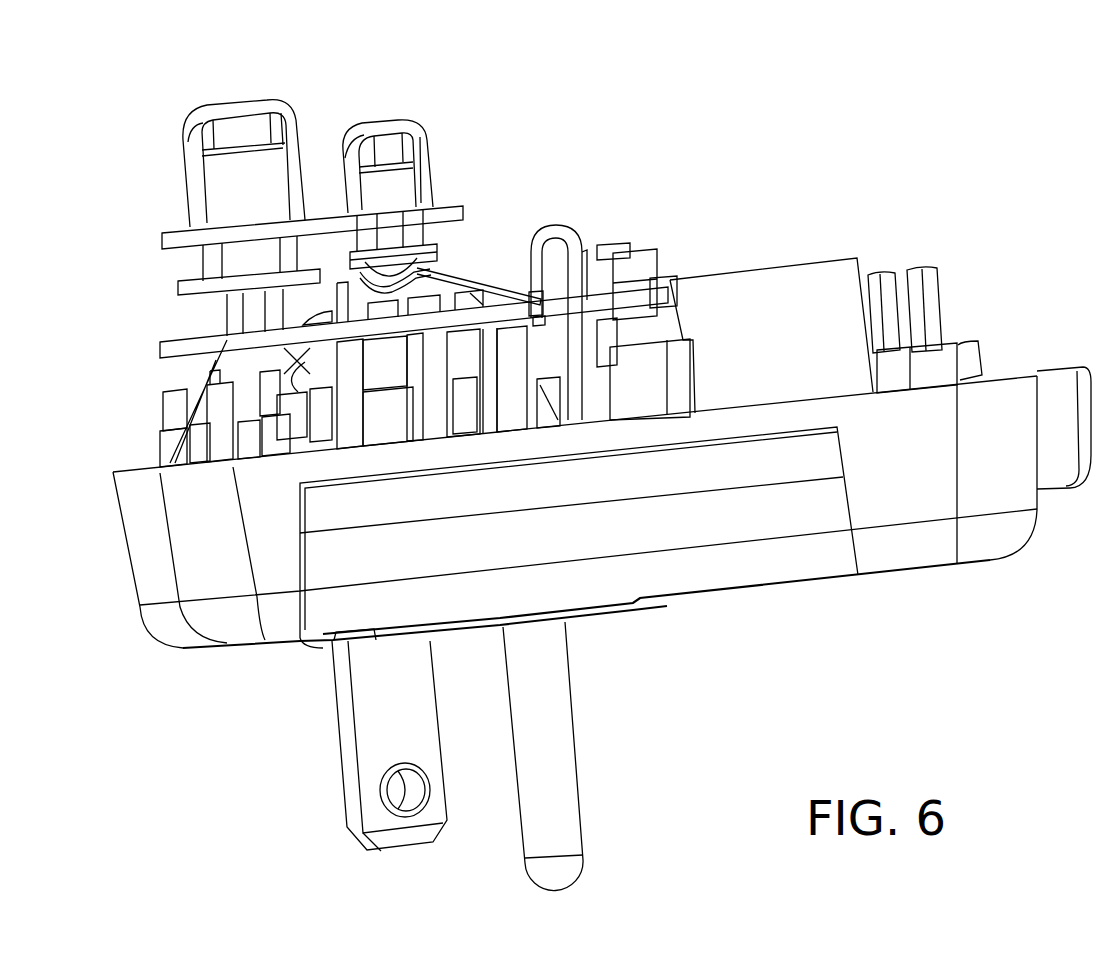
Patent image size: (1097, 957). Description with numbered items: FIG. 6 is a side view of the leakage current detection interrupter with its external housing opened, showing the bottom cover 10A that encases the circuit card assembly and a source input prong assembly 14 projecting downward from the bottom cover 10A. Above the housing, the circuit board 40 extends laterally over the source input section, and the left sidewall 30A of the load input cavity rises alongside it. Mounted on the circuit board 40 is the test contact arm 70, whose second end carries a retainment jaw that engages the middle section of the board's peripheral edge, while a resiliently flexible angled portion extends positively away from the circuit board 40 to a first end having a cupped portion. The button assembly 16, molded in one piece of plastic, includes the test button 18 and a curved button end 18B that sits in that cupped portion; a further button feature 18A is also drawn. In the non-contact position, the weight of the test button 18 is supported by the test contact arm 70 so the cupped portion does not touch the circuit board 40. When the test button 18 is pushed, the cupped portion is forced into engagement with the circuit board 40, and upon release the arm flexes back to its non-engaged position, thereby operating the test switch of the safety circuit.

The bottom cover 10A is at (727, 516).
The source input prong assembly 14 is at (333, 784).
The button assembly 16 is at (438, 99).
The test button 18 is at (445, 178).
The terminal plate 18A is at (422, 251).
The curved button end 18B is at (435, 270).
The left sidewall 30A is at (771, 335).
The circuit board 40 is at (190, 342).
The test contact arm 70 is at (497, 286).